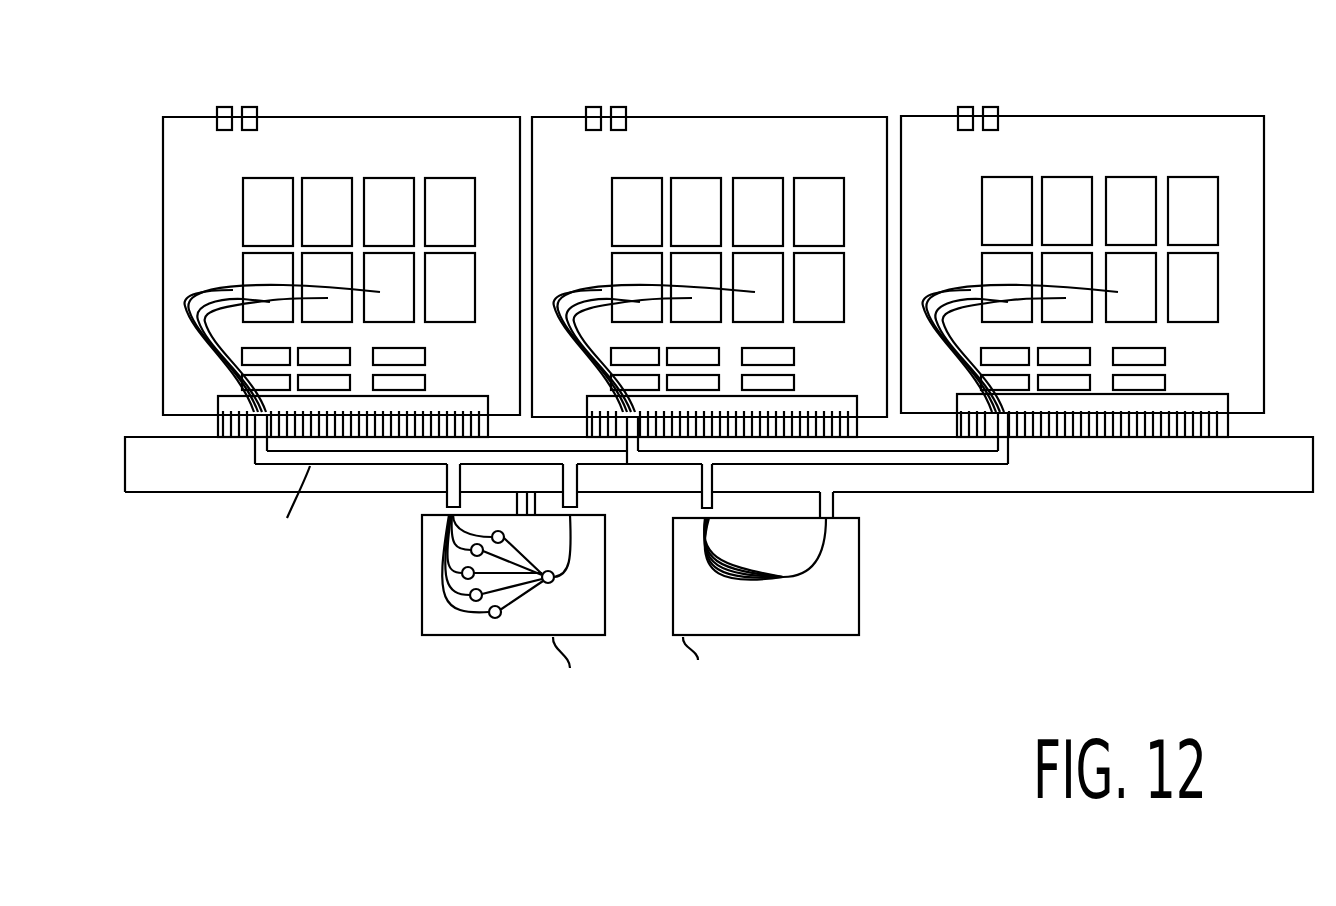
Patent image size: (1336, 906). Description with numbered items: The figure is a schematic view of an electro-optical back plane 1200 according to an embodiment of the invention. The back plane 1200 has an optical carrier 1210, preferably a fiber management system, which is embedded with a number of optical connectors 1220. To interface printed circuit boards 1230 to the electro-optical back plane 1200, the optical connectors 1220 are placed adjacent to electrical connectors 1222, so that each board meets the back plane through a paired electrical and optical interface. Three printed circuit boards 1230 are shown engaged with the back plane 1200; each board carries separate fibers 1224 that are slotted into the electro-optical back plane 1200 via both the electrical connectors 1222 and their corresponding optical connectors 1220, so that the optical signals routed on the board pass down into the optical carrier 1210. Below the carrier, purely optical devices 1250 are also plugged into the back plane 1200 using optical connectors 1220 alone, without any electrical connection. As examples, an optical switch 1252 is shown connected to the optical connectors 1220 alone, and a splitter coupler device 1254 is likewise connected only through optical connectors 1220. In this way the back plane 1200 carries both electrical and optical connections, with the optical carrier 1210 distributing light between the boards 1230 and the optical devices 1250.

The electro-optical back plane 1200 is at (1273, 482).
The optical carrier 1210 is at (981, 465).
The optical connectors 1220 is at (258, 450).
The electrical connectors 1222 is at (215, 403).
The separate fibers 1224 is at (212, 278).
The printed circuit boards 1230 is at (193, 118).
The purely optical devices 1250 is at (657, 663).
The optical switch 1252 is at (430, 637).
The splitter coupler device 1254 is at (832, 637).